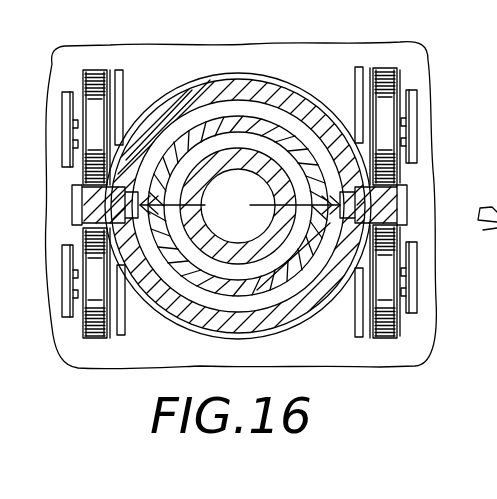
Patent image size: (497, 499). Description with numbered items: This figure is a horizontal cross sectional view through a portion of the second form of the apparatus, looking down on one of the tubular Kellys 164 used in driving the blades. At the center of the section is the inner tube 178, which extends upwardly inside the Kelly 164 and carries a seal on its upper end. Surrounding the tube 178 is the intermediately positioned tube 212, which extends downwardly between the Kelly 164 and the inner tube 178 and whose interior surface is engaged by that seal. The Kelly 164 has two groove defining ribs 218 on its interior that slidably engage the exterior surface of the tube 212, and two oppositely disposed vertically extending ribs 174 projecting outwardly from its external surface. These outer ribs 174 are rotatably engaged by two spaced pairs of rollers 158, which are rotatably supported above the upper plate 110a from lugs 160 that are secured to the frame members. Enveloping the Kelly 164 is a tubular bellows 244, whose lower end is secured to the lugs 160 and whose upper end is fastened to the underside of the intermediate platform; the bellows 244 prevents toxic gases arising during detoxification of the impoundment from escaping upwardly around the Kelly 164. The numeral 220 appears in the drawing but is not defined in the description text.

The upper plate 110a is at (278, 364).
The rollers 158 is at (98, 70).
The lugs 160 is at (124, 68).
The tubular Kelly 164 is at (277, 95).
The vertically extending ribs 174 is at (393, 198).
The tube 178 is at (203, 186).
The intermediately positioned tube 212 is at (214, 291).
The groove defining ribs 218 is at (150, 145).
The axis 220 is at (240, 206).
The tubular bellows 244 is at (191, 86).